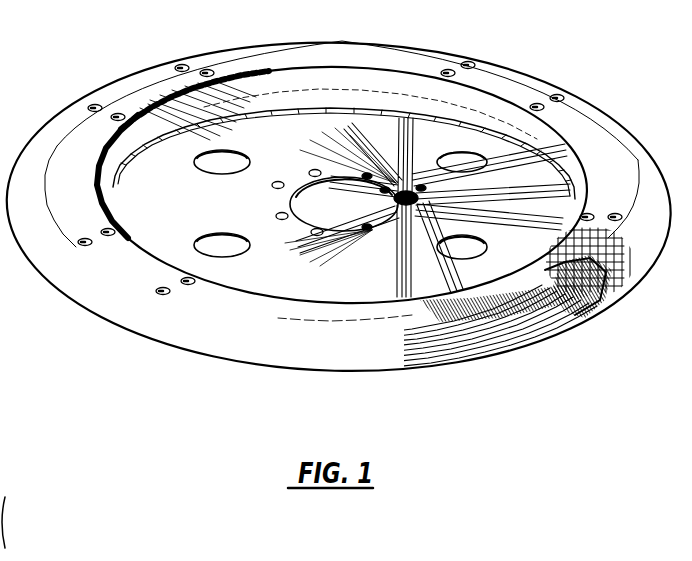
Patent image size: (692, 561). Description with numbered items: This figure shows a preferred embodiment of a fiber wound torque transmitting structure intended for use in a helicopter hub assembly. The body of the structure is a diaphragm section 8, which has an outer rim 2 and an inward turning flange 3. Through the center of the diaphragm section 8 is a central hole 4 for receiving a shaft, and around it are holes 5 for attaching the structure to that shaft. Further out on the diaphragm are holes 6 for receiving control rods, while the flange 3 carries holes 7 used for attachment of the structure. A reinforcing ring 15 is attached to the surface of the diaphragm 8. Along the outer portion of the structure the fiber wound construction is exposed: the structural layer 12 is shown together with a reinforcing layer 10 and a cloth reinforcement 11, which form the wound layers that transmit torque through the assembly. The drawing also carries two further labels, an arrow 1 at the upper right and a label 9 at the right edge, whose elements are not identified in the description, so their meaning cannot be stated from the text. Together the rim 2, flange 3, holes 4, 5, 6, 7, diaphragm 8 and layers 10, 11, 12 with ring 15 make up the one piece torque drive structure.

The wheel assembly 1 is at (672, 57).
The rim 2 is at (24, 510).
The inward turning flange 3 is at (523, 82).
The central hole 4 is at (310, 215).
The holes for attaching the structure to a shaft 5 is at (285, 158).
The holes for receiving control rods 6 is at (203, 238).
The holes in flange 7 is at (115, 114).
The diaphragm section 8 is at (397, 260).
The outer rim region 9 is at (645, 247).
The reinforcing layer 10 is at (555, 333).
The cloth reinforcement 11 is at (627, 280).
The structural layer 12 is at (603, 300).
The reinforcing ring 15 is at (280, 113).